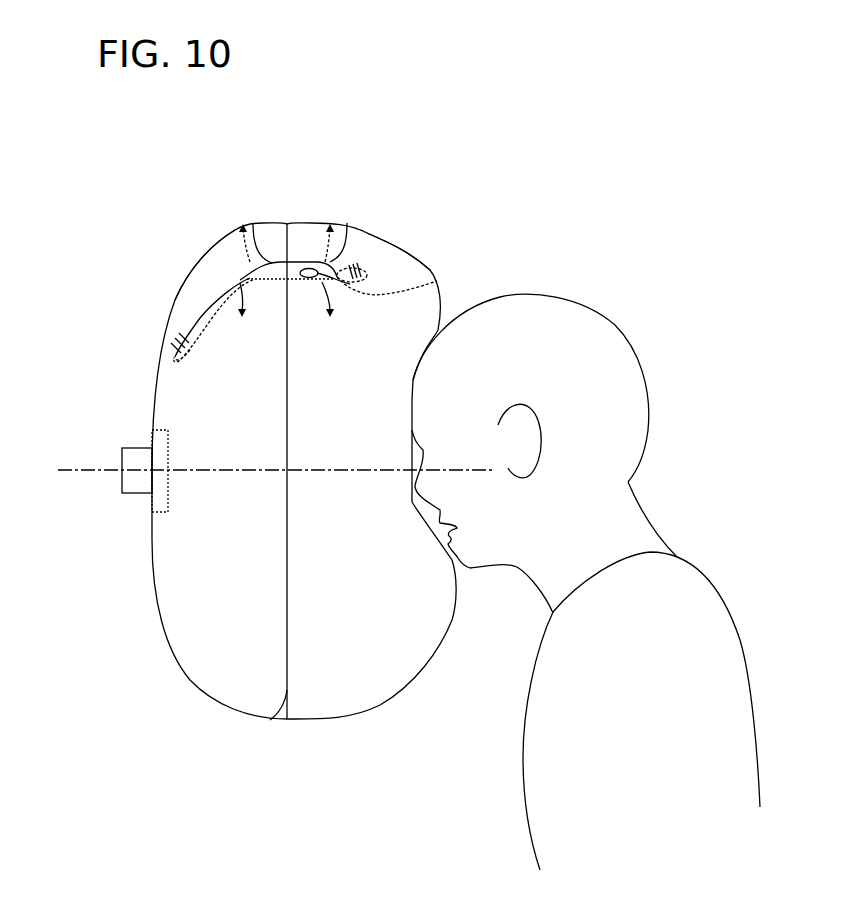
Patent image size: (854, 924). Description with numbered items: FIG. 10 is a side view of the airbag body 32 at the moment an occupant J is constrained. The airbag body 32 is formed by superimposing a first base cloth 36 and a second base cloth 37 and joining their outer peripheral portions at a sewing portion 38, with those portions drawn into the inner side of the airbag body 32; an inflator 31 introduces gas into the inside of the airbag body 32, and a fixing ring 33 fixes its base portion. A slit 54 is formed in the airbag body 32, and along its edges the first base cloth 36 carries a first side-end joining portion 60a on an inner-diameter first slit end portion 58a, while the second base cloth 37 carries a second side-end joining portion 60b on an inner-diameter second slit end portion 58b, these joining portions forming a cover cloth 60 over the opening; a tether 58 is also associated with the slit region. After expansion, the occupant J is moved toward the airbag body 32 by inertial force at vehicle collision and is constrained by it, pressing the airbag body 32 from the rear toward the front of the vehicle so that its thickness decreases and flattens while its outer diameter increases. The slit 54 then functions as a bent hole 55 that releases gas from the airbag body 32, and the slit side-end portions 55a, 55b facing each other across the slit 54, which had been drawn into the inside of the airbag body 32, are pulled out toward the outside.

The inflator 31 is at (137, 448).
The airbag body 32 is at (157, 193).
The fixing ring 33 is at (157, 432).
The first base cloth 36 is at (413, 257).
The second base cloth 37 is at (178, 288).
The sewing portion 38 is at (273, 720).
The slit 54 is at (253, 255).
The bent hole 55 is at (309, 253).
The slit side-end portion 55a is at (355, 253).
The slit side-end portion 55b is at (437, 282).
The tether 58 is at (238, 245).
The first slit end portion 58a is at (362, 257).
The second slit end portion 58b is at (166, 337).
The cover cloth 60 is at (260, 288).
The first side-end joining portion 60a is at (369, 260).
The second side-end joining portion 60b is at (160, 353).
The occupant J is at (625, 377).